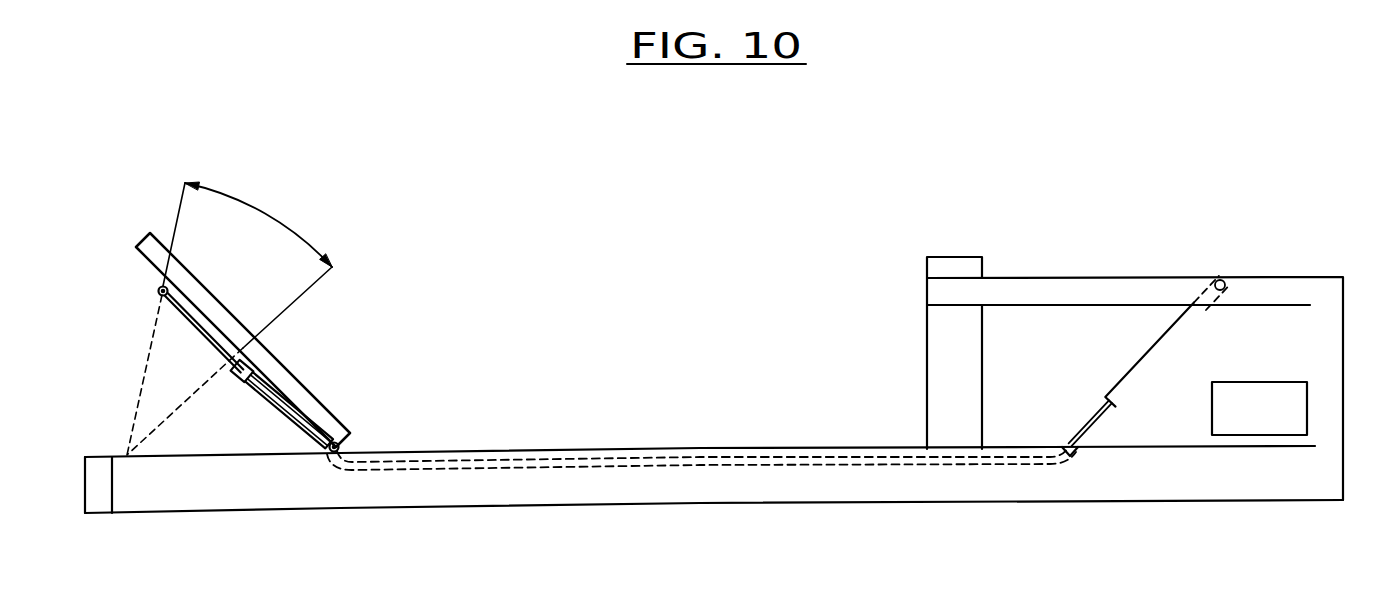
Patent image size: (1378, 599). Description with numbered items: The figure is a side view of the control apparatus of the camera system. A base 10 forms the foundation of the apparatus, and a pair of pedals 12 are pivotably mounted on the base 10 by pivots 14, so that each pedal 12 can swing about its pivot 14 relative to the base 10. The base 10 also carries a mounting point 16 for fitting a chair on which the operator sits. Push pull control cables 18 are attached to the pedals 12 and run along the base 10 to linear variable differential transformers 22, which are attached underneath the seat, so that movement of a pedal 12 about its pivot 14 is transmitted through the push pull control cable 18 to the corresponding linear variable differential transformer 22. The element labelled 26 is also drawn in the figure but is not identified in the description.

The base 10 is at (687, 480).
The pedal 12 is at (302, 402).
The pivot 14 is at (336, 454).
The mounting point 16 is at (943, 272).
The push pull control cable 18 is at (200, 333).
The linear variable differential transformer 22 is at (1175, 325).
The piston rod 26 is at (1127, 372).